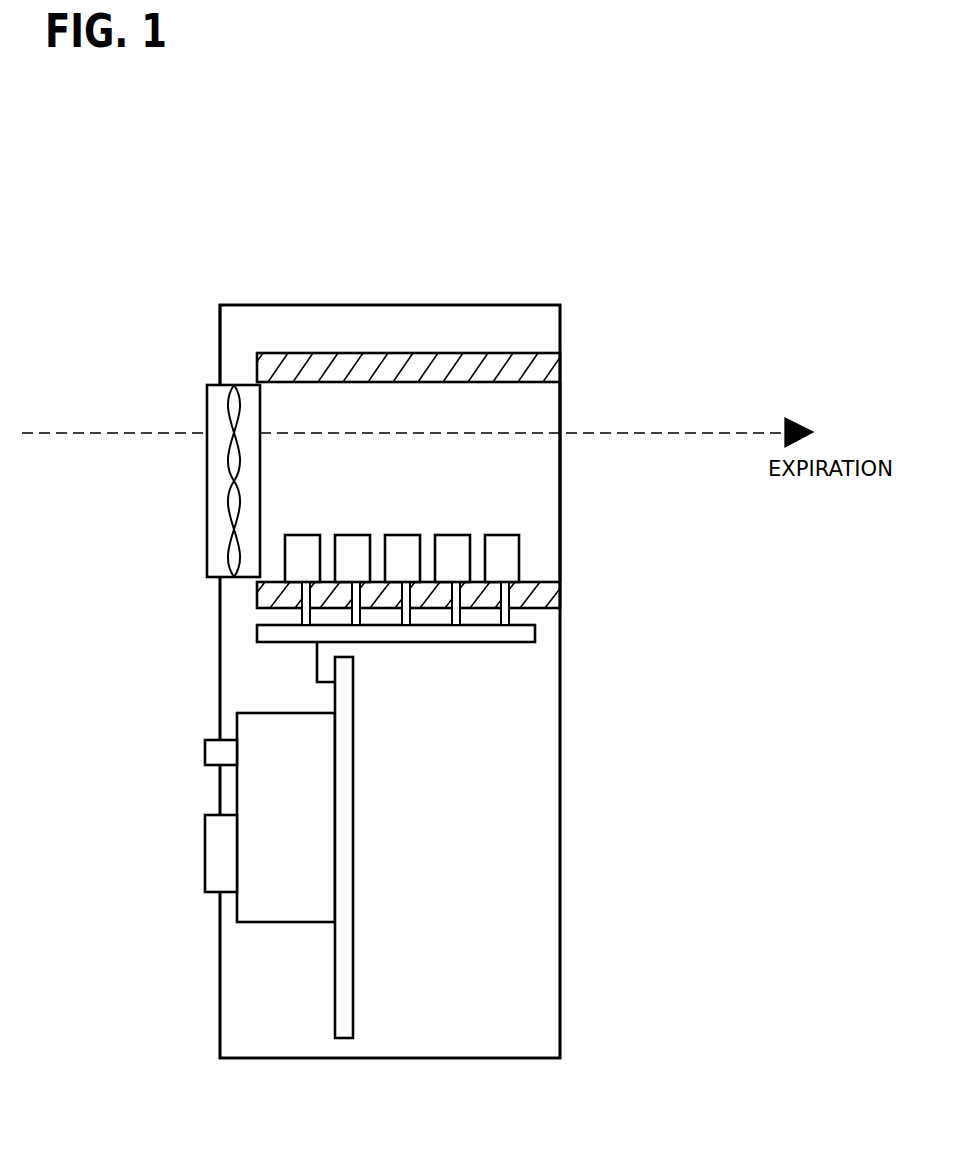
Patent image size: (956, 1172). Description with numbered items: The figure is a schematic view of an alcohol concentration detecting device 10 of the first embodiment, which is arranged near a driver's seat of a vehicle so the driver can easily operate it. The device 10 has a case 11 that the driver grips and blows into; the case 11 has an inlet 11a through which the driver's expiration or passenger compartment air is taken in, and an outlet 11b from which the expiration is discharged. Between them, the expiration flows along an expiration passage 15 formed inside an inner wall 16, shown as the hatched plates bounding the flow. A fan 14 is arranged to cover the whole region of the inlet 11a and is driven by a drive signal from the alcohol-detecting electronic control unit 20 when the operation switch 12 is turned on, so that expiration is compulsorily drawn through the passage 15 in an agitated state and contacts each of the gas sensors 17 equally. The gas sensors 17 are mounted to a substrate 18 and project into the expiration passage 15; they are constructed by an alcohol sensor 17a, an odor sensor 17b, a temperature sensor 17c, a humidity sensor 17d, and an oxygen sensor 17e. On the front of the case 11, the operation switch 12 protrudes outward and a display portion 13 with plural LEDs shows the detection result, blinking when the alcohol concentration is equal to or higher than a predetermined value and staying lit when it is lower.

The alcohol concentration detecting device 10 is at (156, 295).
The case 11 is at (560, 330).
The inlet 11a is at (217, 384).
The outlet 11b is at (560, 515).
The operation switch 12 is at (205, 850).
The display portion 13 is at (205, 748).
The fan 14 is at (207, 512).
The expiration passage 15 is at (548, 553).
The inner wall 16 is at (538, 582).
The gas sensors 17 is at (401, 532).
The alcohol sensor 17a is at (301, 535).
The odor sensor 17b is at (351, 535).
The temperature sensor 17c is at (401, 535).
The humidity sensor 17d is at (451, 535).
The oxygen sensor 17e is at (504, 556).
The substrate 18 is at (490, 642).
The alcohol-detecting electronic control unit 20 is at (355, 898).